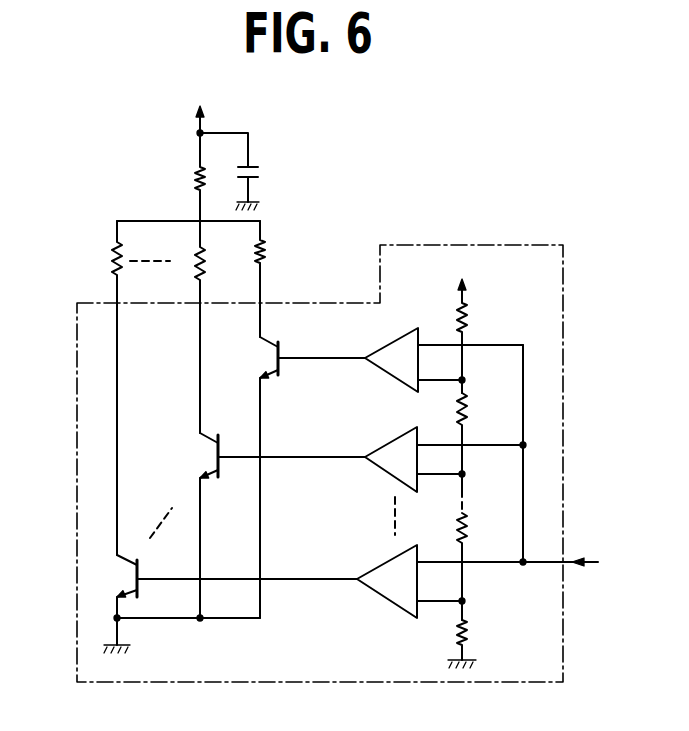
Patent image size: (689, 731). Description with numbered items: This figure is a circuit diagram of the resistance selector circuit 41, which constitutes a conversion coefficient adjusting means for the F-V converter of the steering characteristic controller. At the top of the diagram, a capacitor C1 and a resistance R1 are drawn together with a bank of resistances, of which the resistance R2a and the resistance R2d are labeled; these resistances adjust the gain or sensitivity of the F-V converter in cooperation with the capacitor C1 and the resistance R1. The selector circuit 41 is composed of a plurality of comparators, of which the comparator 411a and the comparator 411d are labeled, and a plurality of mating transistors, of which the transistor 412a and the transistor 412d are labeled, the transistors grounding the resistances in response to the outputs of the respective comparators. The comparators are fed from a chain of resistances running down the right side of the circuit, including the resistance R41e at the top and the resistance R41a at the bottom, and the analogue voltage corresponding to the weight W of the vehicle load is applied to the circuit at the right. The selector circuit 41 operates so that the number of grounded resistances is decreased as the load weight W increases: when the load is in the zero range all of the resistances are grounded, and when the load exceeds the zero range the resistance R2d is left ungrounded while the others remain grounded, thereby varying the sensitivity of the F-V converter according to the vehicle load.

The resistance R1 is at (195, 180).
The capacitor C1 is at (262, 165).
The resistance R2a is at (112, 265).
The resistance R2d is at (265, 255).
The resistance selector circuit 41 is at (523, 245).
The comparator 411d is at (403, 343).
The transistor 412d is at (270, 340).
The comparator 411a is at (383, 593).
The transistor 412a is at (122, 594).
The resistor R41e is at (470, 318).
The resistor R41a is at (468, 632).
The weight of vehicle load W is at (575, 563).